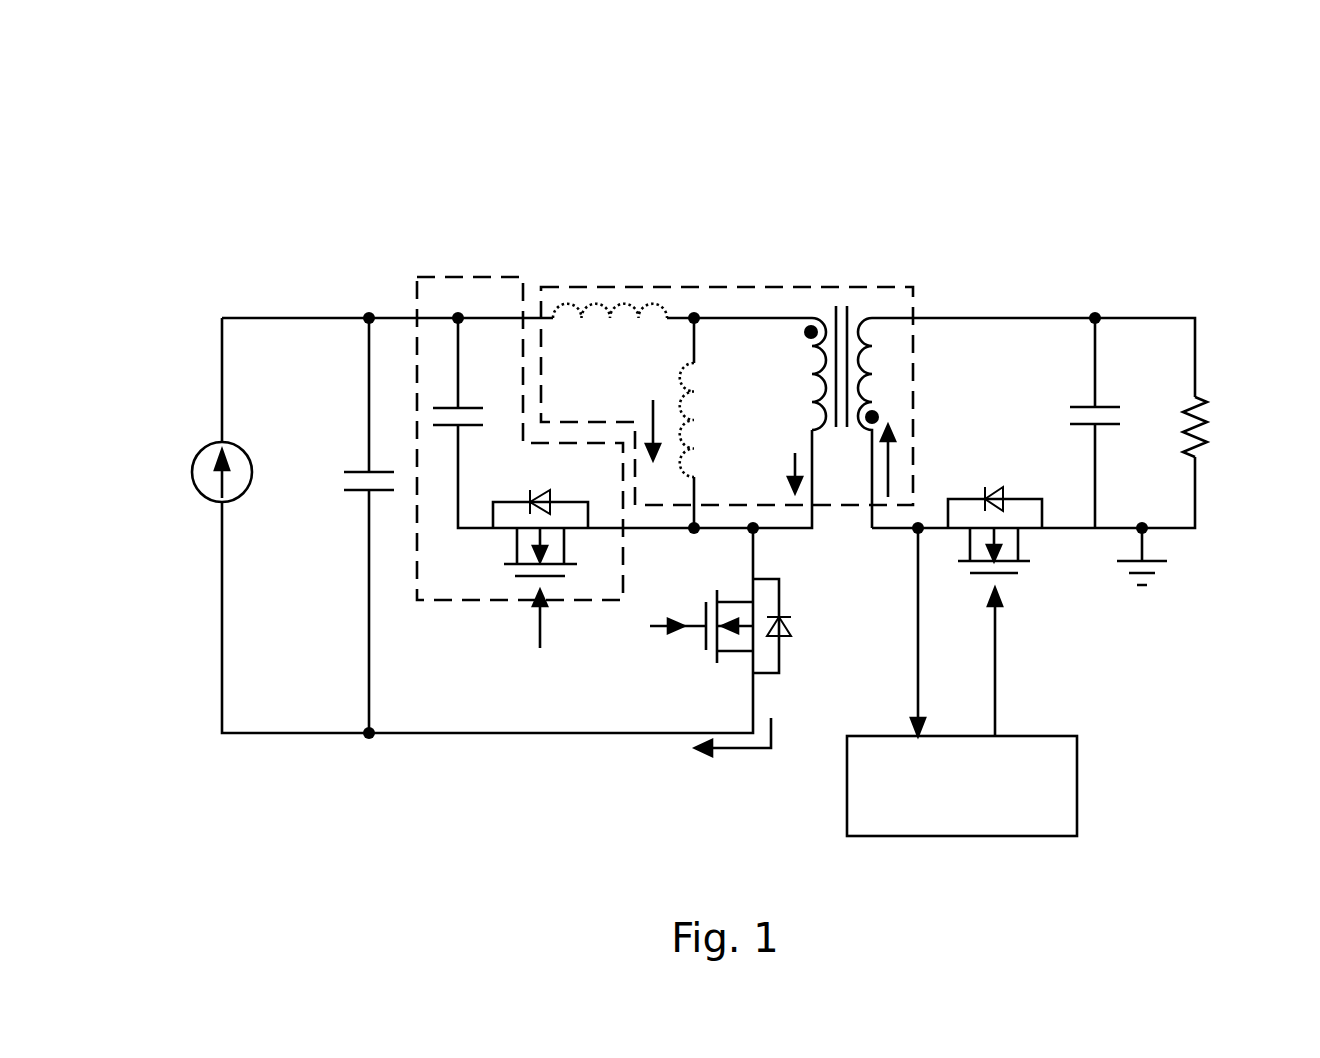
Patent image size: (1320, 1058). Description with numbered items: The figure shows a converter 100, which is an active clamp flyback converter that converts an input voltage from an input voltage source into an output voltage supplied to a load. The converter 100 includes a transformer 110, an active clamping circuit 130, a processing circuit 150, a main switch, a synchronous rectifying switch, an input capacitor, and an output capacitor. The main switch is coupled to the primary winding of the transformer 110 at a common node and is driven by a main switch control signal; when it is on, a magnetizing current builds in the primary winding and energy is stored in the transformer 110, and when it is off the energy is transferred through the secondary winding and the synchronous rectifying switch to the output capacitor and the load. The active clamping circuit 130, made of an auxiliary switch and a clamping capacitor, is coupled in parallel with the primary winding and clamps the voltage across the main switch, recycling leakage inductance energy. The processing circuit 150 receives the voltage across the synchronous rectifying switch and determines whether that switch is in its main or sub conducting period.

The converter 100 is at (666, 438).
The transformer 110 is at (870, 288).
The active clamping circuit 130 is at (478, 277).
The processing circuit 150 is at (962, 786).